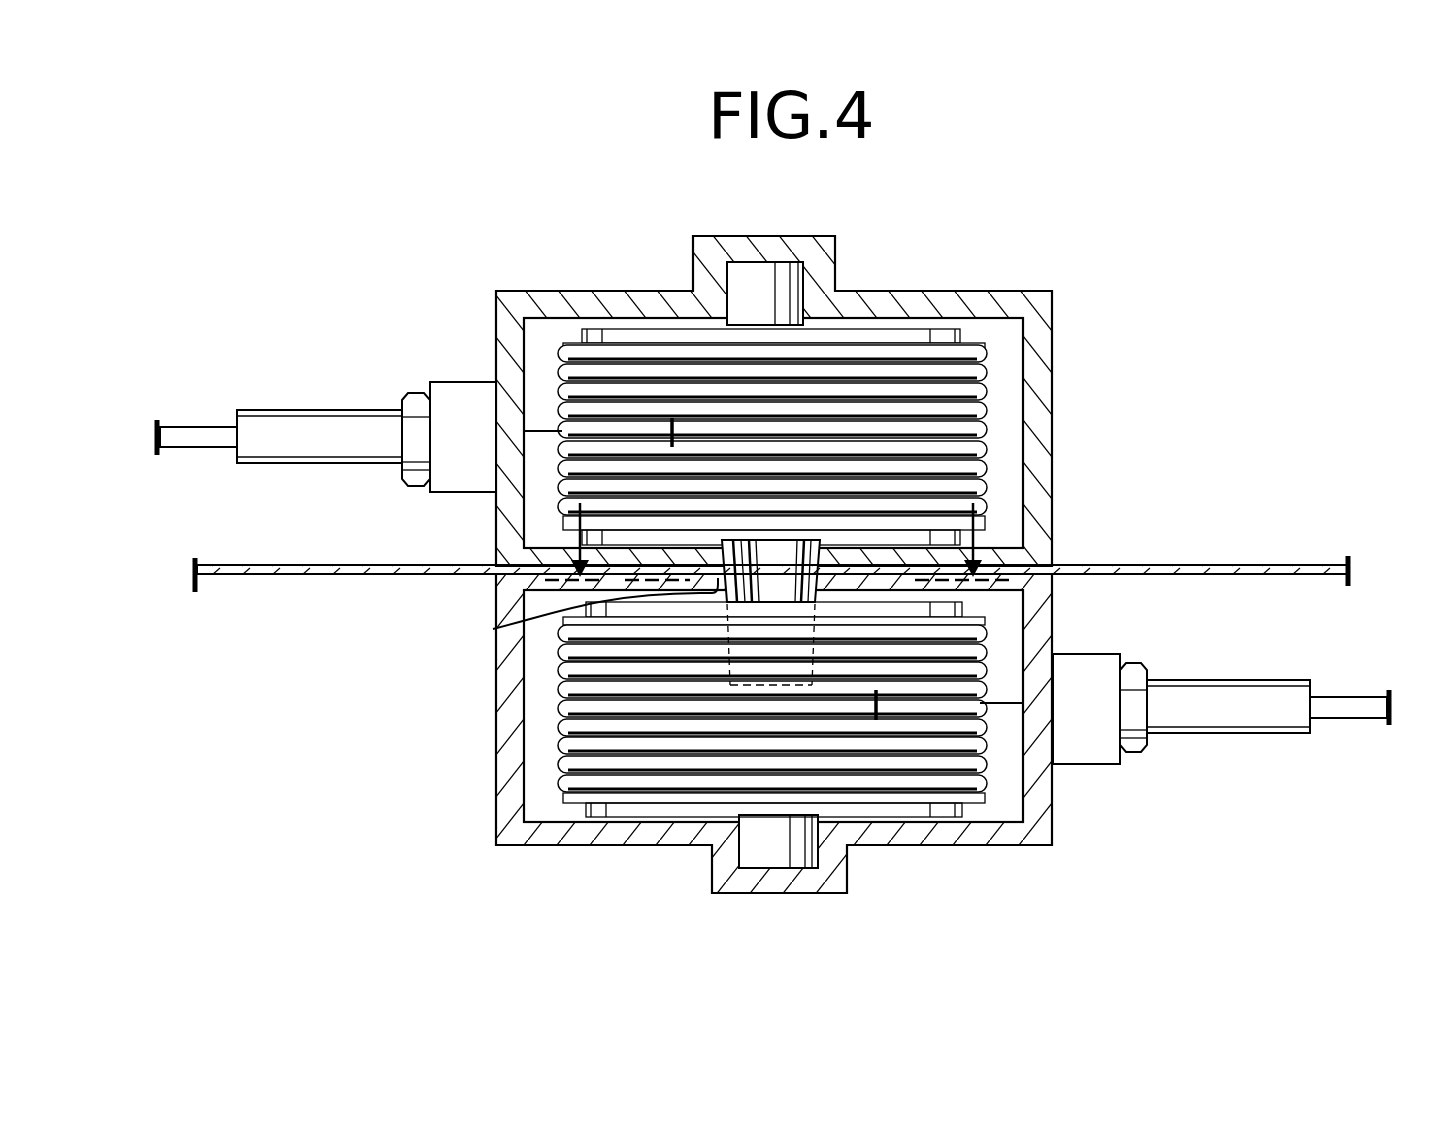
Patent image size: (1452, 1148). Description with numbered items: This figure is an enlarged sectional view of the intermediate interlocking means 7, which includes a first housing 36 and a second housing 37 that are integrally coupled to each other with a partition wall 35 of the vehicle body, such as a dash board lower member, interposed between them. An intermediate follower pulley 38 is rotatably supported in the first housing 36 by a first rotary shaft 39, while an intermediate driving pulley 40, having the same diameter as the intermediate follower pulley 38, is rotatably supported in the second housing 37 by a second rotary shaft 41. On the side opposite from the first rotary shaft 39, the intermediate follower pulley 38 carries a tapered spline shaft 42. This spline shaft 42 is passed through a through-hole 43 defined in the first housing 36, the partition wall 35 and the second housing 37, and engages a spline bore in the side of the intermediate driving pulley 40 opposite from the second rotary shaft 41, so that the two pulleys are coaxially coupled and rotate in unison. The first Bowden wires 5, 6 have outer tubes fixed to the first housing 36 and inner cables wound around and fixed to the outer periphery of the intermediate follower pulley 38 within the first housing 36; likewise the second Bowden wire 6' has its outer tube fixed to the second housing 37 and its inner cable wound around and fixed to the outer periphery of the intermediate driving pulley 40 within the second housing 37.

The intermediate interlocking means 7 is at (789, 542).
The first housing 36 is at (1032, 395).
The second housing 37 is at (512, 705).
The intermediate follower pulley 38 is at (622, 333).
The first rotary shaft 39 is at (762, 277).
The intermediate driving pulley 40 is at (633, 812).
The second rotary shaft 41 is at (808, 852).
The tapered spline shaft 42 is at (782, 555).
The through-hole 43 is at (582, 615).
The partition wall 35 is at (1172, 562).
The first Bowden wire 5 is at (774, 536).
The first Bowden wire 6 is at (326, 410).
The second Bowden wire 6' is at (1221, 695).